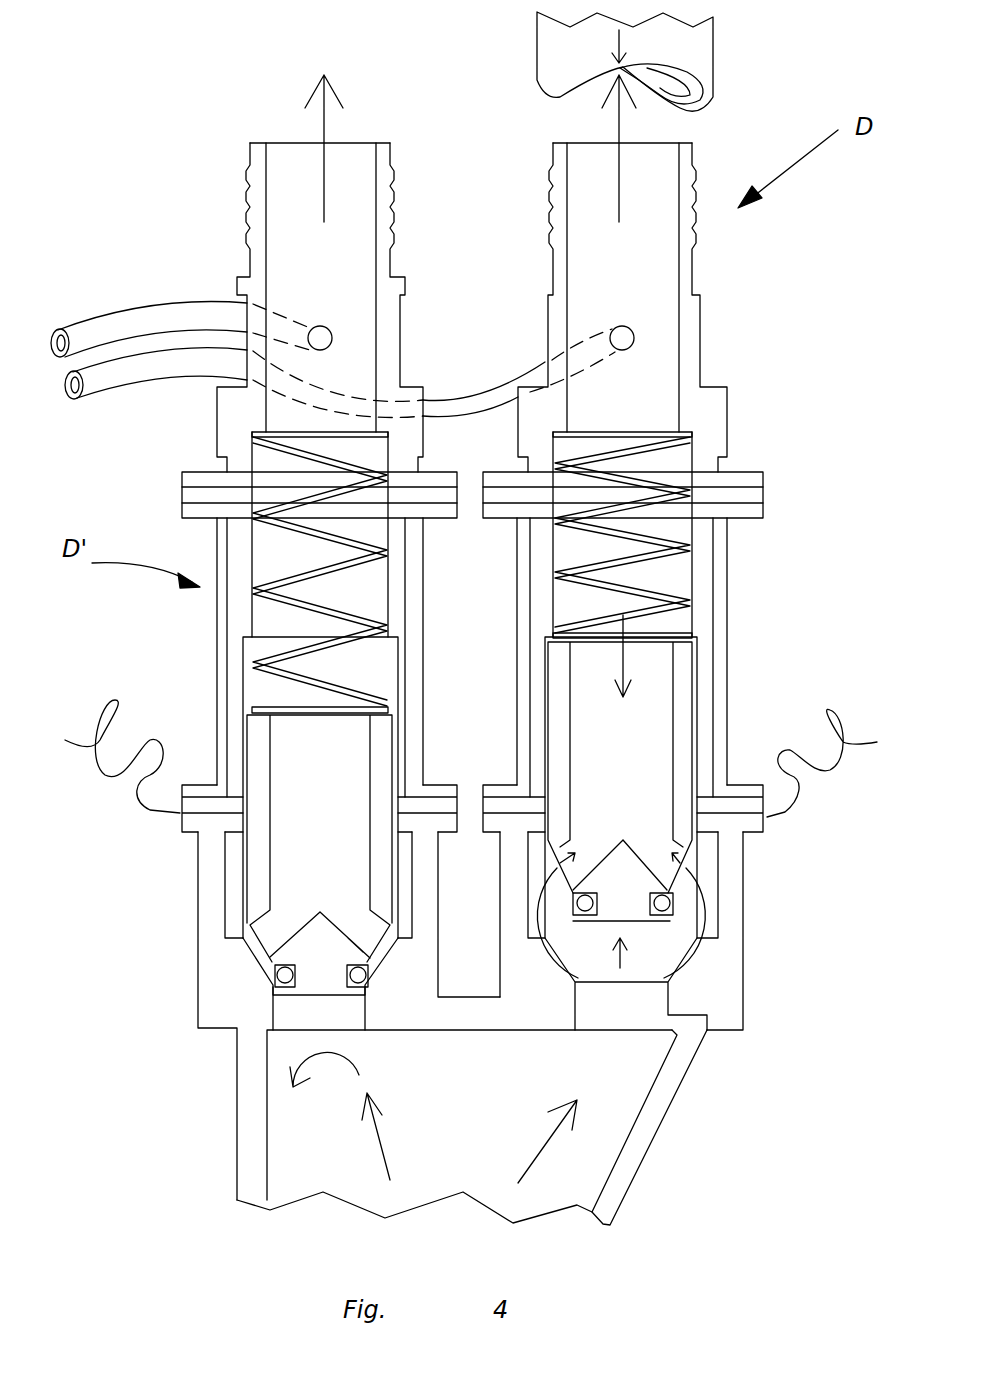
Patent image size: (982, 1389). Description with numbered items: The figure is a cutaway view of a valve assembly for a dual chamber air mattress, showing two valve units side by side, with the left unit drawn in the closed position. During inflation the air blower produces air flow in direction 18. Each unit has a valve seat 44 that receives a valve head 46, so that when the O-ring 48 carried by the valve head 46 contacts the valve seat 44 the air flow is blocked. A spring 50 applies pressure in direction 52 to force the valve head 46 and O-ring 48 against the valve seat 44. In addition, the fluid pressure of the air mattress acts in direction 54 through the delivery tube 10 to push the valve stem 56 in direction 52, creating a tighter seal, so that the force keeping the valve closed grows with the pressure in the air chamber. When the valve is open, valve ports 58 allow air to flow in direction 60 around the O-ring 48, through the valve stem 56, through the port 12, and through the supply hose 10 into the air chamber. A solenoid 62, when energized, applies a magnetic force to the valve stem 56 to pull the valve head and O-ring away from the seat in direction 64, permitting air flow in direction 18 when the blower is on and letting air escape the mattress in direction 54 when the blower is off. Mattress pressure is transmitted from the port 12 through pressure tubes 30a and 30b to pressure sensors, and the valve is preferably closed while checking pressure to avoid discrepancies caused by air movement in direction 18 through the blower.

The delivery tube 10 is at (705, 47).
The port 12 is at (688, 277).
The air flow direction 18 is at (380, 1135).
The pressure tube 30a is at (185, 310).
The pressure tube 30b is at (138, 370).
The valve seat 44 is at (670, 1015).
The valve head 46 is at (645, 925).
The O-ring 48 is at (665, 905).
The spring 50 is at (655, 562).
The closing direction 52 is at (620, 663).
The pressure direction 54 is at (615, 43).
The valve stem 56 is at (655, 738).
The valve ports 58 is at (560, 853).
The open flow direction 60 is at (558, 953).
The solenoid 62 is at (722, 660).
The opening direction 64 is at (622, 962).